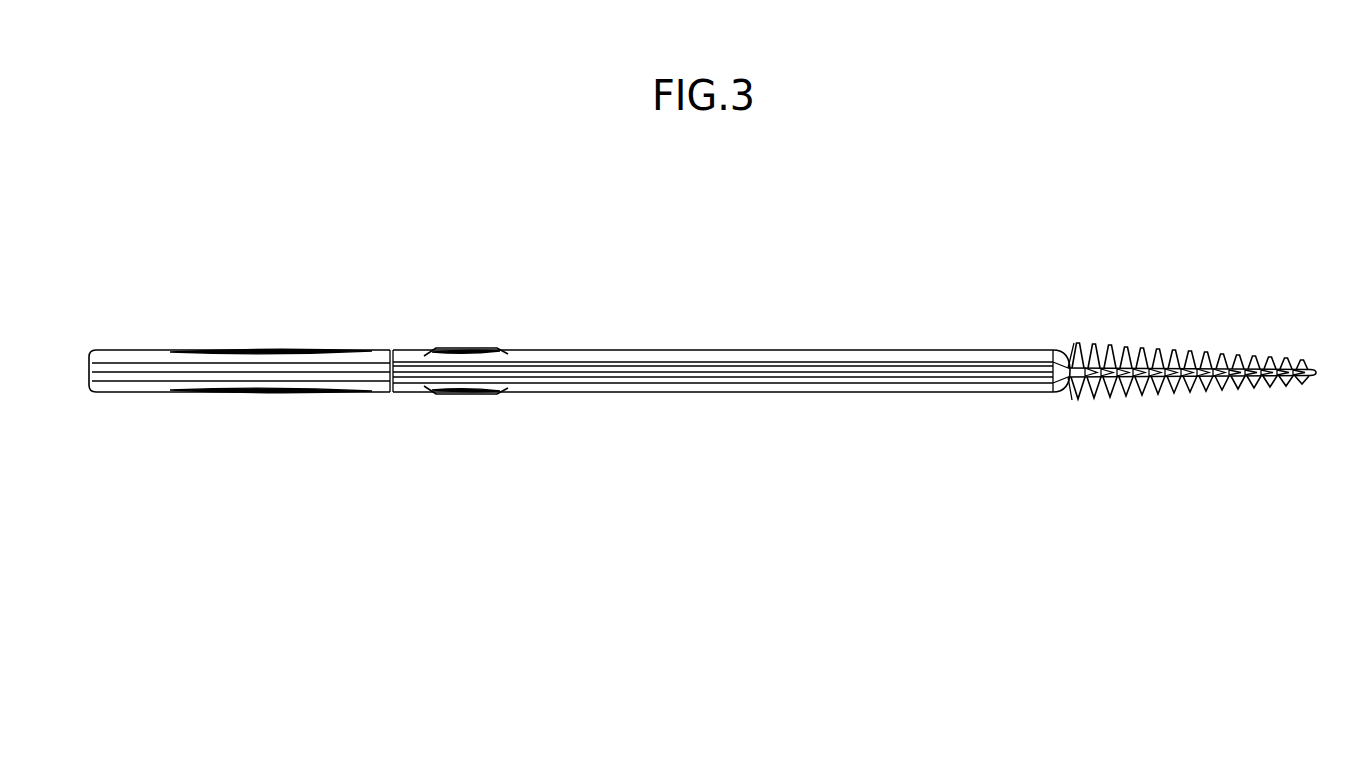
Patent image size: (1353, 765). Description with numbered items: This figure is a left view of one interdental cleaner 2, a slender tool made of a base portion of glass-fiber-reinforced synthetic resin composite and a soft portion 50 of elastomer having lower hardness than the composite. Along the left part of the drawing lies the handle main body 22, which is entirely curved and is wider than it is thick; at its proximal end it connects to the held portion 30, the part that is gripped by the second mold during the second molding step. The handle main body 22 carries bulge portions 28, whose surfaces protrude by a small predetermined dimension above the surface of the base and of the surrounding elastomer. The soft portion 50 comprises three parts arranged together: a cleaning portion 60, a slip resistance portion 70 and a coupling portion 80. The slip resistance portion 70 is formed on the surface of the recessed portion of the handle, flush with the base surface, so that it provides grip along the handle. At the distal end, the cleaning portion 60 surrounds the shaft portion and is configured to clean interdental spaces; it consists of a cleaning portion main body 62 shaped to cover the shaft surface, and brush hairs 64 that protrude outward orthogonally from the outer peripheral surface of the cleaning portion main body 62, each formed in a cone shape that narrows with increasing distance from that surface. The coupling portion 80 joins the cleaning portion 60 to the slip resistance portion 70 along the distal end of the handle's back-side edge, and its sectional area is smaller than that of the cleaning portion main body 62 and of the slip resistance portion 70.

The interdental cleaner 2 is at (1198, 315).
The handle main body 22 is at (1070, 345).
The bulge portions 28 is at (470, 349).
The held portion 30 is at (152, 392).
The soft portion 50 is at (950, 497).
The cleaning portion 60 is at (1157, 455).
The cleaning portion main body 62 is at (1210, 393).
The brush hairs 64 is at (1172, 393).
The slip resistance portion 70 is at (968, 385).
The coupling portion 80 is at (1067, 384).